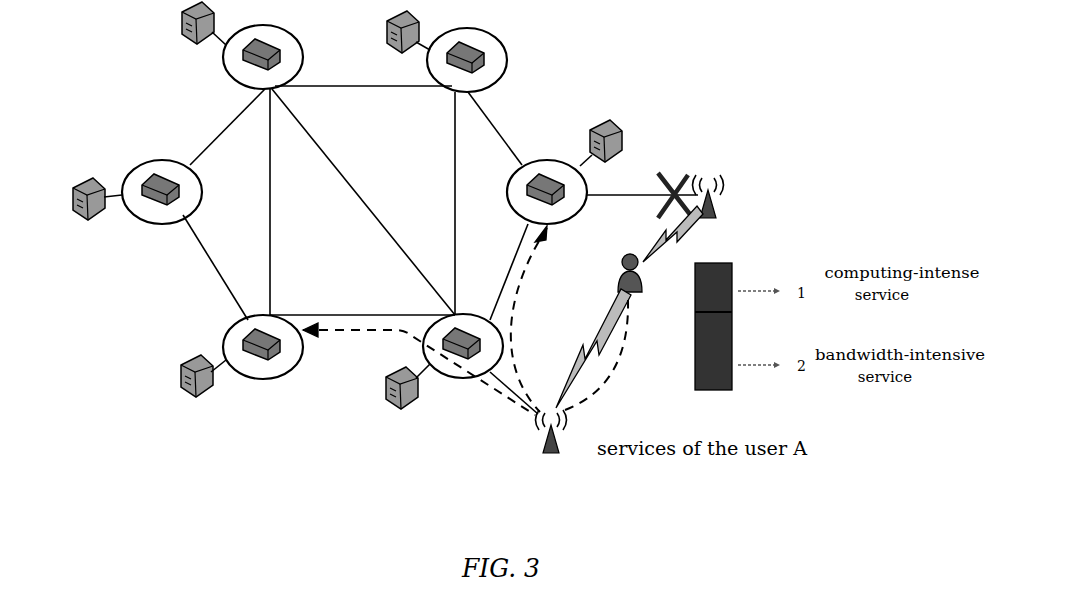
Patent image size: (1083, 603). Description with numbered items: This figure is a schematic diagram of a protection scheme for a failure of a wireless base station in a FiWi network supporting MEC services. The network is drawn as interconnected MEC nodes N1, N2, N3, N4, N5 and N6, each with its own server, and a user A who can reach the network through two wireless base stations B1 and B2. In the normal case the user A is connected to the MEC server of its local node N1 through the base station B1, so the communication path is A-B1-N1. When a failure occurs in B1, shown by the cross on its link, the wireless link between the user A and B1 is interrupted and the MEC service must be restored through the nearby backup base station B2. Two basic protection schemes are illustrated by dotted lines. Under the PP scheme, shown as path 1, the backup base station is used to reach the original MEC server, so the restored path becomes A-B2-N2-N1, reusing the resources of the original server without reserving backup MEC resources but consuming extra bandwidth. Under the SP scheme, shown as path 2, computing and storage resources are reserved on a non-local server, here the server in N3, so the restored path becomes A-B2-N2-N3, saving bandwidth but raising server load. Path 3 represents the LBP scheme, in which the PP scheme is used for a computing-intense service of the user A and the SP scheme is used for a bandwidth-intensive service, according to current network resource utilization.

The MEC node N1 is at (564, 184).
The MEC node N2 is at (444, 365).
The MEC node N3 is at (242, 365).
The MEC node N4 is at (137, 205).
The MEC node N5 is at (242, 45).
The MEC node N6 is at (460, 51).
The wireless BS B1 is at (655, 208).
The wireless BS B2 is at (551, 446).
The user A is at (633, 289).
The path 1 is at (571, 319).
The path 2 is at (481, 357).
The path 3 is at (673, 250).